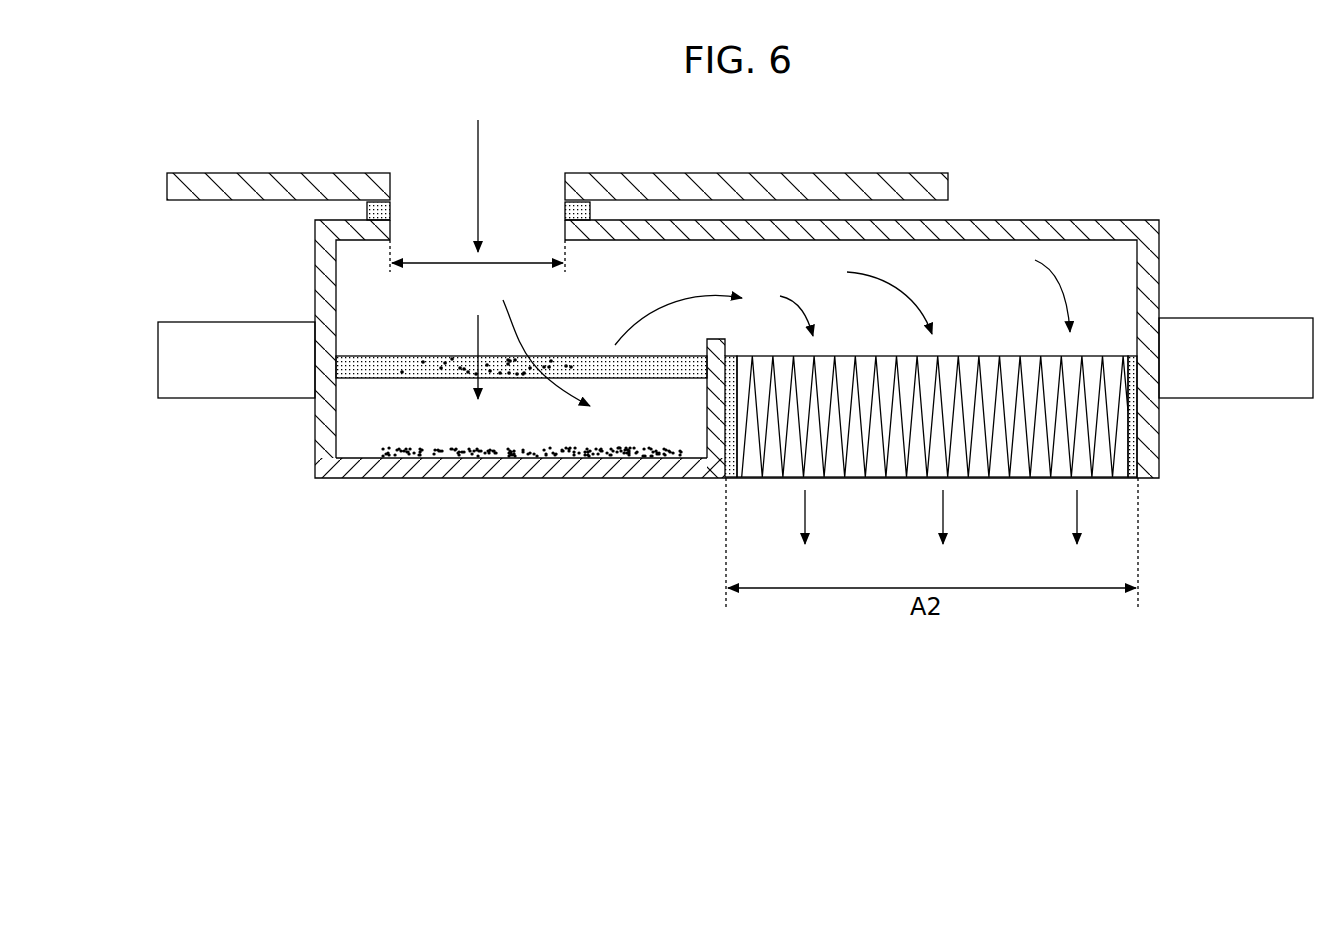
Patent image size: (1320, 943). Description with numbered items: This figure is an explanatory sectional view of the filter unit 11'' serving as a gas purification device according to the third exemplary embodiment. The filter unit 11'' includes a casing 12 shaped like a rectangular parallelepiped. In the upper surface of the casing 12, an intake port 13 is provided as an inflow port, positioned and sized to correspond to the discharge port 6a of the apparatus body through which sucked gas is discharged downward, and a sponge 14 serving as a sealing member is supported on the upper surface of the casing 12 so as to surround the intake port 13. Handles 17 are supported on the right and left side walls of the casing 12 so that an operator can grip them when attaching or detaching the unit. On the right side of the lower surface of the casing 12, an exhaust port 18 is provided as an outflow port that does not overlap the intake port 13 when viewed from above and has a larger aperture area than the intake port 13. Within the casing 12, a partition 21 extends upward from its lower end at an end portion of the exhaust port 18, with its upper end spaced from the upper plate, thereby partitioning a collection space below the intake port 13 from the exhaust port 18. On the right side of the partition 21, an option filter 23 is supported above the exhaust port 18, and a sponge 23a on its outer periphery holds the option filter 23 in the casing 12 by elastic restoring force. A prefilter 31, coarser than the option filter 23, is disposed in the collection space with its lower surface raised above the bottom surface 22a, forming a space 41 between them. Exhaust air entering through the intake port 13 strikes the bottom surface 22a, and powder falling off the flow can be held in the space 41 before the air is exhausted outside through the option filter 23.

The discharge port 6a is at (390, 190).
The filter unit 11'' is at (718, 375).
The casing 12 is at (320, 270).
The intake port 13 is at (565, 232).
The sponge 14 is at (577, 208).
The handles 17 is at (190, 330).
The exhaust port 18 is at (1133, 422).
The partition 21 is at (710, 352).
The bottom surface 22a is at (363, 458).
The option filter 23 is at (1005, 453).
The sponge 23a is at (964, 443).
The prefilter 31 is at (380, 360).
The space 41 is at (355, 422).